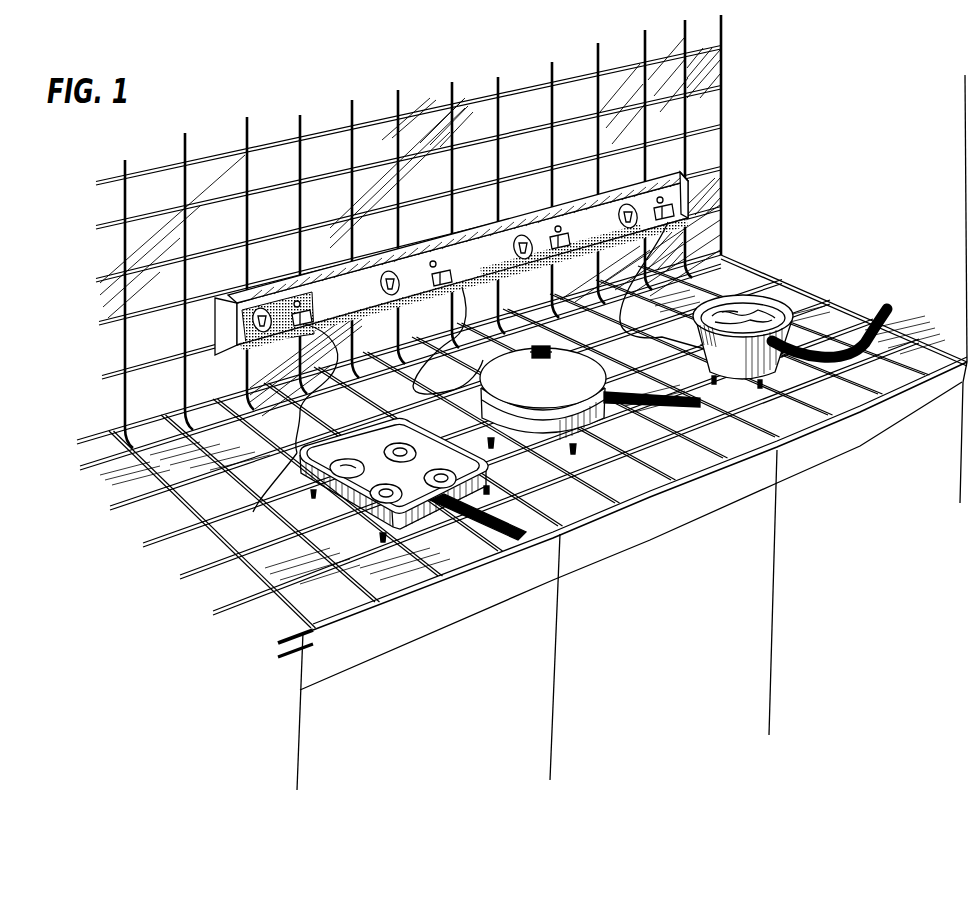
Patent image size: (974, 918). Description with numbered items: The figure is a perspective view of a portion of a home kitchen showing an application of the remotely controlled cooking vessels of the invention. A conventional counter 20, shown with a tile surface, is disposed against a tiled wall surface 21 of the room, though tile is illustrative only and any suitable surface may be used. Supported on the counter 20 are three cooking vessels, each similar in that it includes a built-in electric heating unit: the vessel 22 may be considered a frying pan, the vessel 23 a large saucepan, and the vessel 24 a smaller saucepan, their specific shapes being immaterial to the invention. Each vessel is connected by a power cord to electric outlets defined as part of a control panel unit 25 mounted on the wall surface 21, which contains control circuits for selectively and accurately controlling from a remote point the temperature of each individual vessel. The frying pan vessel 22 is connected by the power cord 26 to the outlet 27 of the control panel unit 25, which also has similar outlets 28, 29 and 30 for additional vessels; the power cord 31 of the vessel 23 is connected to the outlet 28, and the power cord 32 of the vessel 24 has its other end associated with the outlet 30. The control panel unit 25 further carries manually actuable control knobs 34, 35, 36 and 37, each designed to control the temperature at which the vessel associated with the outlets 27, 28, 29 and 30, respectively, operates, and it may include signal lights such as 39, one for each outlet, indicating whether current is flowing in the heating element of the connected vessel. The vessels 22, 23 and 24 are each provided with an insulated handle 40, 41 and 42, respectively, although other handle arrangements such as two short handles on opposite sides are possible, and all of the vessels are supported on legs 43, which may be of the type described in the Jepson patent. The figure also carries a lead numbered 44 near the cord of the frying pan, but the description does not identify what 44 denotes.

The counter 20 is at (812, 306).
The wall surface 21 is at (712, 116).
The cooking vessel 22 is at (418, 530).
The cooking vessel 23 is at (590, 440).
The cooking vessel 24 is at (756, 296).
The control panel unit 25 is at (688, 200).
The power cord 26 is at (300, 397).
The outlet 27 is at (326, 288).
The outlet 28 is at (445, 272).
The outlet 29 is at (546, 236).
The outlet 30 is at (672, 203).
The power cord 31 is at (461, 310).
The power cord 32 is at (700, 220).
The control knob 34 is at (243, 307).
The control knob 35 is at (388, 270).
The control knob 36 is at (518, 233).
The control knob 37 is at (634, 203).
The signal light 39 is at (297, 300).
The insulated handle 40 is at (480, 524).
The insulated handle 41 is at (688, 404).
The insulated handle 42 is at (860, 322).
The legs 43 is at (380, 538).
The cord 44 is at (297, 455).